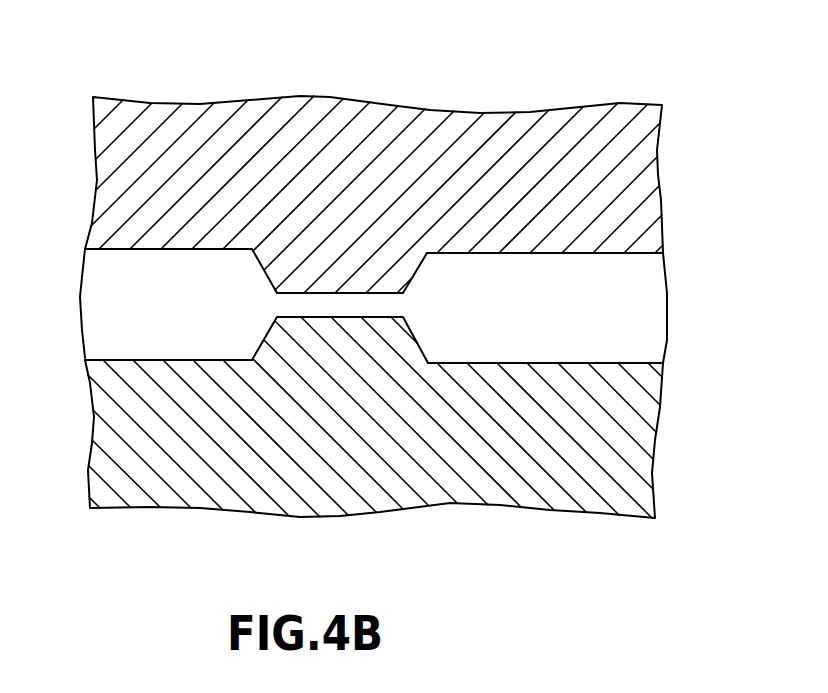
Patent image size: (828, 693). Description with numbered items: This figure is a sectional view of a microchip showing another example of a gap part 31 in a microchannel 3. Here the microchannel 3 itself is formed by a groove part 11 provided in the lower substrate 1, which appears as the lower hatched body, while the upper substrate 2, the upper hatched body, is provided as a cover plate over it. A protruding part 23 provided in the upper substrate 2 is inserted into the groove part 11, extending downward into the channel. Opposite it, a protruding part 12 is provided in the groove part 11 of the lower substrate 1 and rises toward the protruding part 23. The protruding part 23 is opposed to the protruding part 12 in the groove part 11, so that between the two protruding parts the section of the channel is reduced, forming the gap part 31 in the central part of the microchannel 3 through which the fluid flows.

The lower substrate 1 is at (128, 443).
The upper substrate 2 is at (128, 178).
The microchannel 3 is at (125, 296).
The groove part 11 is at (188, 336).
The protruding part 12 is at (340, 337).
The protruding part 23 is at (308, 273).
The gap part 31 is at (372, 302).